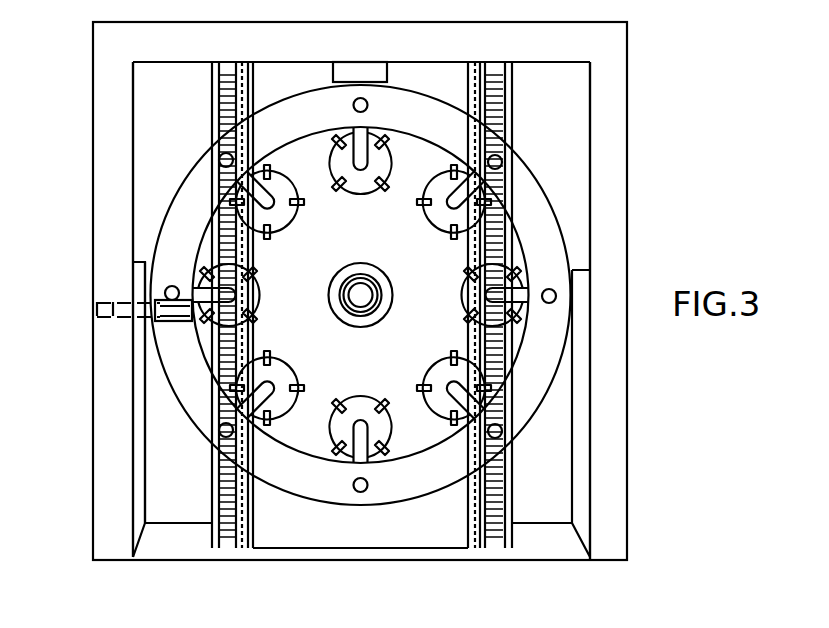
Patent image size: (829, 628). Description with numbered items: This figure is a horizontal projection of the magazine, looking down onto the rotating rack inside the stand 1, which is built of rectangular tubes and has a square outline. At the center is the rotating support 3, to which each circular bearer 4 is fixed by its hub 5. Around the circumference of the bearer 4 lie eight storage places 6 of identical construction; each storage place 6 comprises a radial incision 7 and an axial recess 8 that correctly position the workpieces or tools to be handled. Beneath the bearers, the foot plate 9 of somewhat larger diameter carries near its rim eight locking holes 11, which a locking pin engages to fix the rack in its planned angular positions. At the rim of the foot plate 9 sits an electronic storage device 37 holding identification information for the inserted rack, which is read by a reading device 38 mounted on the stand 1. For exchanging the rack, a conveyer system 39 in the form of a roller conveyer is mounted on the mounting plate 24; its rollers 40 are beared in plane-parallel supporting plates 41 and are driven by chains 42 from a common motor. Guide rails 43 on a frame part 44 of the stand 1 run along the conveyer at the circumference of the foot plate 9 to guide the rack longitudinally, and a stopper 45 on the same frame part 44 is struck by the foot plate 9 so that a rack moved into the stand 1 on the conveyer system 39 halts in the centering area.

The stand 1 is at (82, 126).
The rotating support 3 is at (360, 292).
The bearer 4 is at (517, 358).
The hub 5 is at (388, 312).
The storage place 6 is at (527, 280).
The radial incision 7 is at (477, 177).
The axial recess 8 is at (455, 233).
The foot plate 9 is at (537, 412).
The locking hole 11 is at (166, 287).
The mounting plate 24 is at (360, 532).
The electronic storage device 37 is at (172, 326).
The reading device 38 is at (95, 305).
The conveyer system 39 is at (190, 497).
The screw 40 is at (228, 545).
The supporting plate 41 is at (211, 552).
The chain 42 is at (248, 548).
The guide rail 43 is at (138, 461).
The frame part 44 is at (133, 246).
The stopper 45 is at (364, 64).